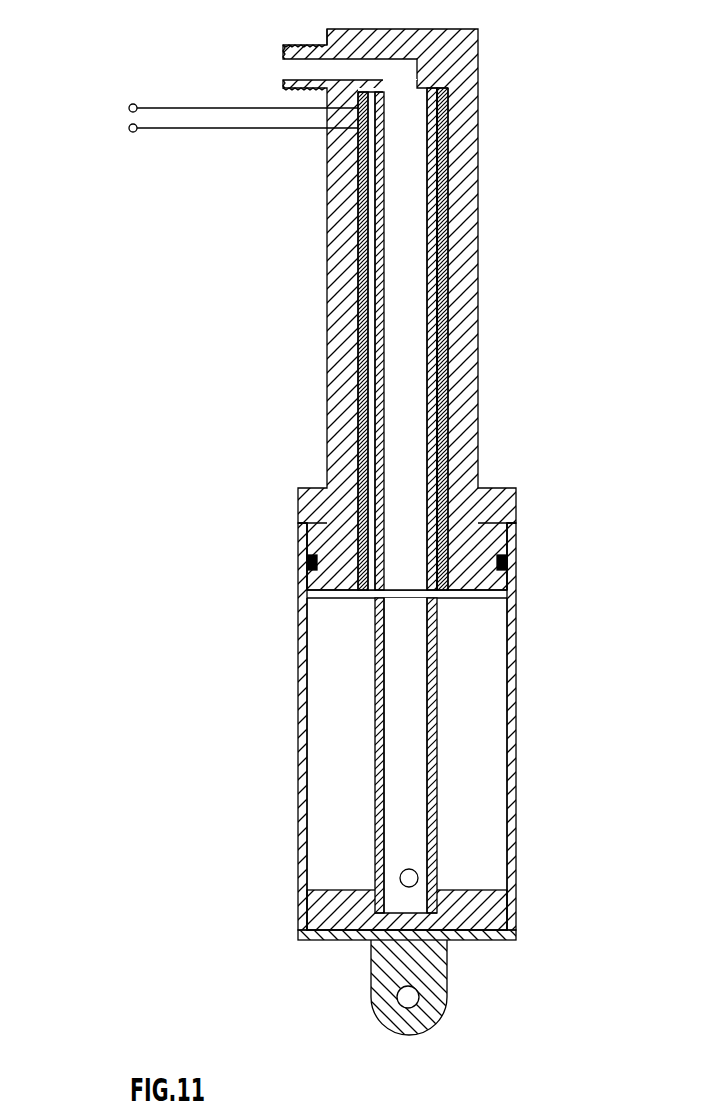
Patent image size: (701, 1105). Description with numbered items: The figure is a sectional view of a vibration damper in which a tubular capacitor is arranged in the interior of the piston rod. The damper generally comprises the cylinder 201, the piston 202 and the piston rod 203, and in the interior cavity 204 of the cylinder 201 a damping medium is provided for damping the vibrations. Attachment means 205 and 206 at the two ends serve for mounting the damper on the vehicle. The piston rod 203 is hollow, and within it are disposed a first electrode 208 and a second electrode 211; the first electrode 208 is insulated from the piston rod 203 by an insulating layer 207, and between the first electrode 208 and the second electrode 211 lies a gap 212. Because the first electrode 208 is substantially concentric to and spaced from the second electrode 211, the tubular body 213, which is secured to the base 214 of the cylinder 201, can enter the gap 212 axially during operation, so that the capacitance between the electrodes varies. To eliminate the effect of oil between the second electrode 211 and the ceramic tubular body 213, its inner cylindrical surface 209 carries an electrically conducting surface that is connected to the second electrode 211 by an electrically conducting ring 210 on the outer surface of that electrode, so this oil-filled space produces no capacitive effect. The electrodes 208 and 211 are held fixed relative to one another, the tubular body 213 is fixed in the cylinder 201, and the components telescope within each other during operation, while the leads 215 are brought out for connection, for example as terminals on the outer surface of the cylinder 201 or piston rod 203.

The cylinder 201 is at (513, 635).
The piston 202 is at (493, 538).
The piston rod 203 is at (468, 165).
The interior cavity 204 is at (488, 718).
The attachment means 205 is at (452, 38).
The attachment means 206 is at (437, 987).
The insulating layer 207 is at (448, 287).
The first electrode 208 is at (446, 370).
The inner cylindrical surface 209 is at (385, 763).
The electrically conducting ring 210 is at (433, 588).
The second electrode 211 is at (430, 455).
The gap 212 is at (434, 418).
The tubular body 213 is at (440, 810).
The base 214 is at (490, 907).
The leads 215 is at (129, 128).